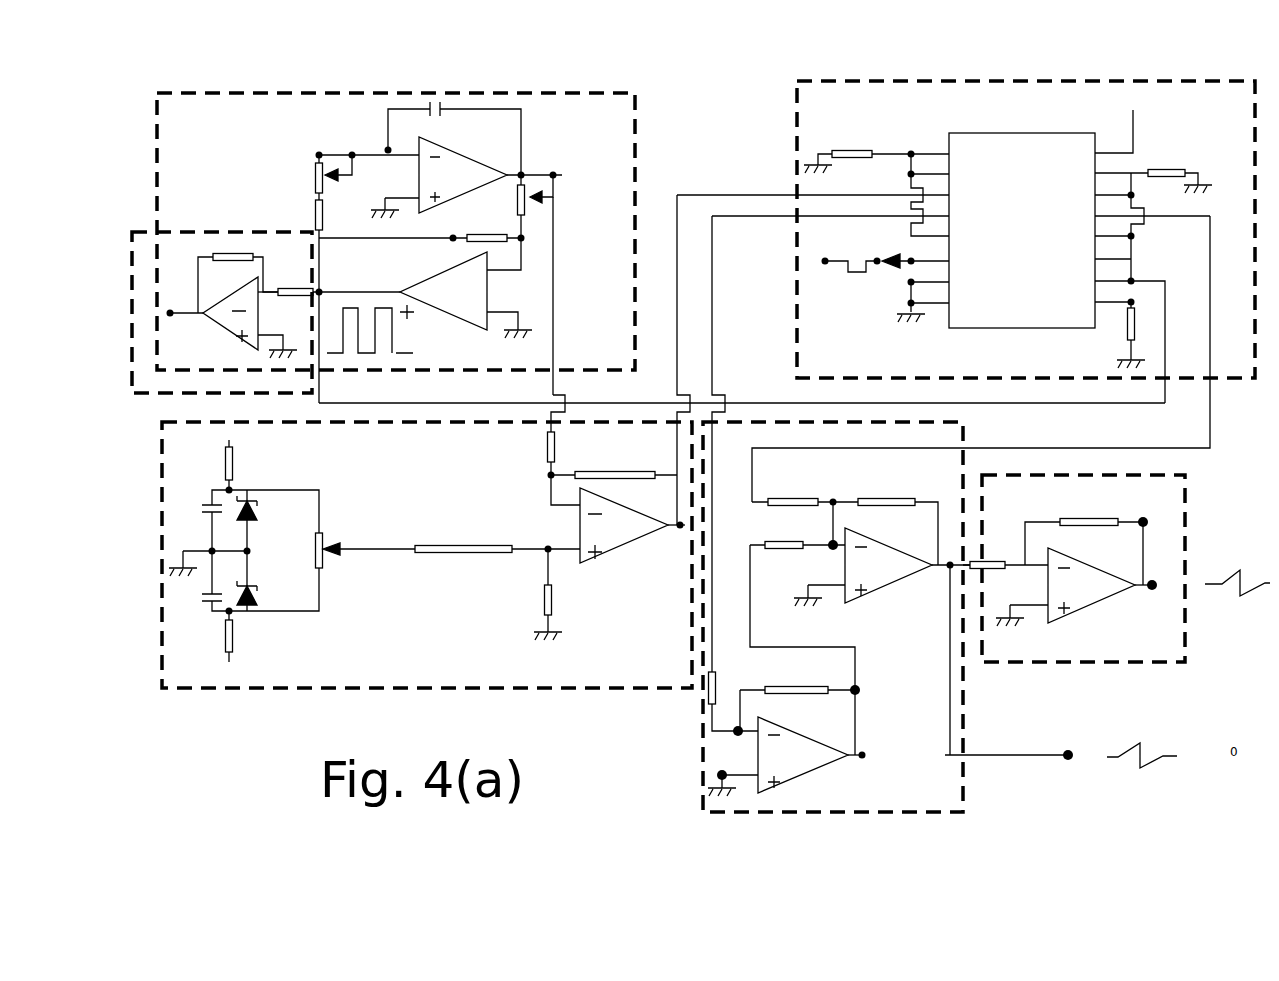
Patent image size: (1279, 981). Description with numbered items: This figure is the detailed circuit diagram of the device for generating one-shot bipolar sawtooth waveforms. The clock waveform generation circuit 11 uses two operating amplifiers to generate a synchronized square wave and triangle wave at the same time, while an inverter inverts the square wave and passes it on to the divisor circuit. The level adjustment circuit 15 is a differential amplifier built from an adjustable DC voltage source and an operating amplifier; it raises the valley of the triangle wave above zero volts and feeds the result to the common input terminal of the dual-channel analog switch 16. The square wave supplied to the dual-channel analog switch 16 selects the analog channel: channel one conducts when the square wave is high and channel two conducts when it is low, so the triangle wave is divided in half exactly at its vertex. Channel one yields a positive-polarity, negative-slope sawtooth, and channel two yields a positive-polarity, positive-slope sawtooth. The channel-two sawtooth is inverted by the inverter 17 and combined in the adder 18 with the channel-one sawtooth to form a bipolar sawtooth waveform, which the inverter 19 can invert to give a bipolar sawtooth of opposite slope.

The clock waveform generation circuit 11 is at (247, 117).
The level adjustment circuit 15 is at (510, 655).
The dual-channel analog switch 16 is at (1082, 105).
The first inverter 17 is at (825, 757).
The adder 18 is at (873, 583).
The first inverter 19 is at (1160, 505).